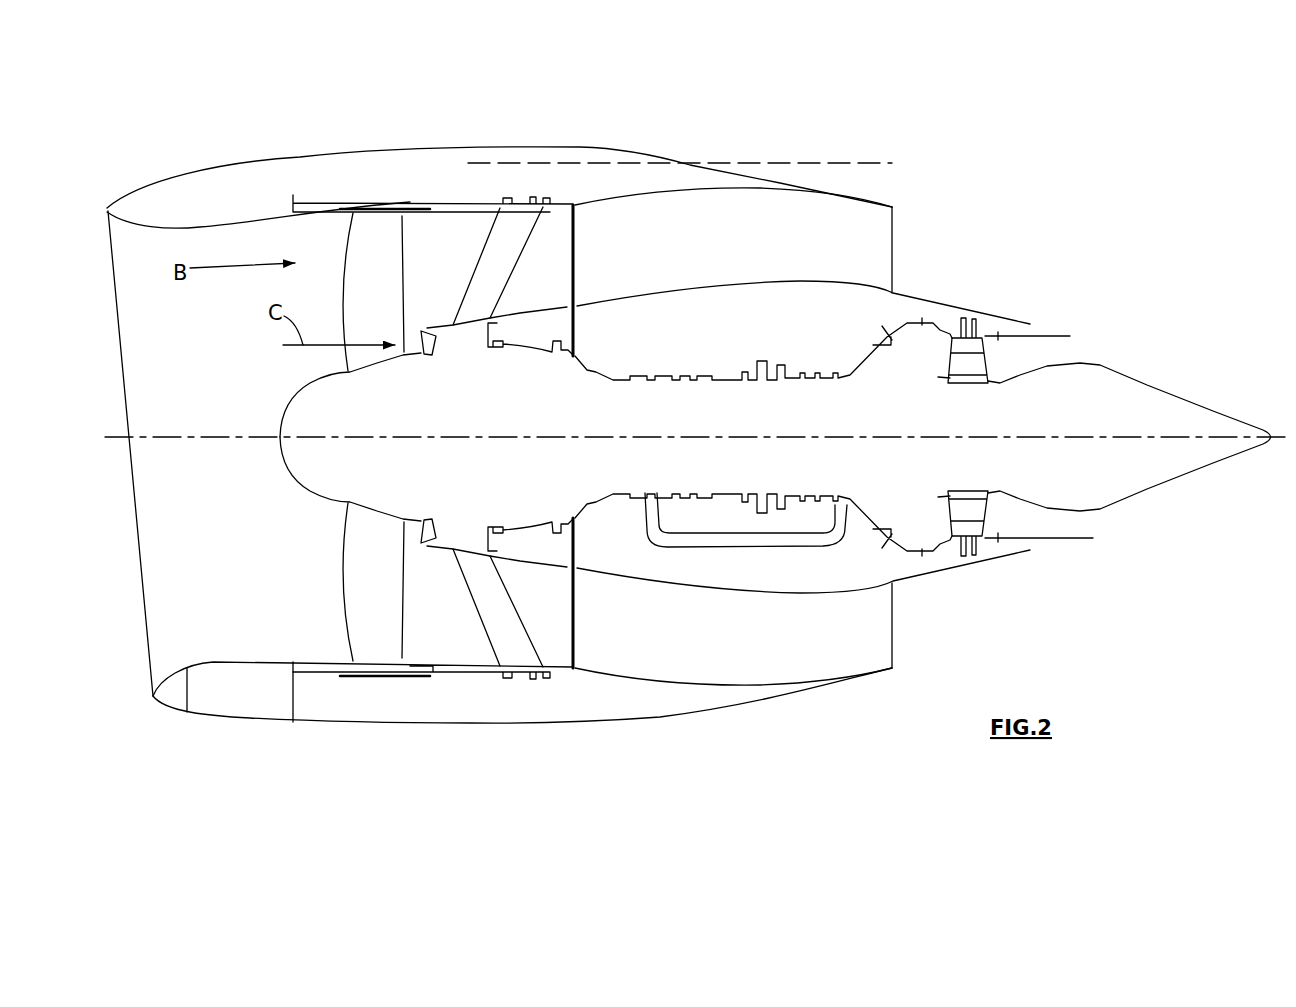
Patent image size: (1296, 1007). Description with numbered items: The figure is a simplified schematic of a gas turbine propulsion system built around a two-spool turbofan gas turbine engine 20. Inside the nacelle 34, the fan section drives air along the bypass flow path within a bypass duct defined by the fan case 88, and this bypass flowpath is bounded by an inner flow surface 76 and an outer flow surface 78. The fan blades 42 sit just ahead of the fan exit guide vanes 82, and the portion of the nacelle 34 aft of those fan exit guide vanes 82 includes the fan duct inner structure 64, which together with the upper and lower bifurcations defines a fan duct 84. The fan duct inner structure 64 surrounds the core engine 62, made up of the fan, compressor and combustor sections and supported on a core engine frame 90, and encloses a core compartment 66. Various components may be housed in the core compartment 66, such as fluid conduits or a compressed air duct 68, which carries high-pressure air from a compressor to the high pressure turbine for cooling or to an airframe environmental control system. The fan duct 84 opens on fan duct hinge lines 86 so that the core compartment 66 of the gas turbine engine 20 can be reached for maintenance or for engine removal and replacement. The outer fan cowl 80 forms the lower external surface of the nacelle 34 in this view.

The gas turbine engine 20 is at (808, 102).
The nacelle 34 is at (266, 148).
The fan blades 42 is at (347, 559).
The core engine 62 is at (748, 368).
The fan duct inner structure 64 is at (681, 288).
The core compartment 66 is at (790, 574).
The compressed air duct 68 is at (851, 543).
The inner flow surface 76 is at (647, 583).
The outer flow surface 78 is at (660, 682).
The fan cowl 80 is at (661, 720).
The fan exit guide vanes 82 is at (490, 602).
The fan duct 84 is at (909, 640).
The fan duct hinge lines 86 is at (838, 164).
The fan case 88 is at (425, 670).
The core engine frame 90 is at (467, 330).